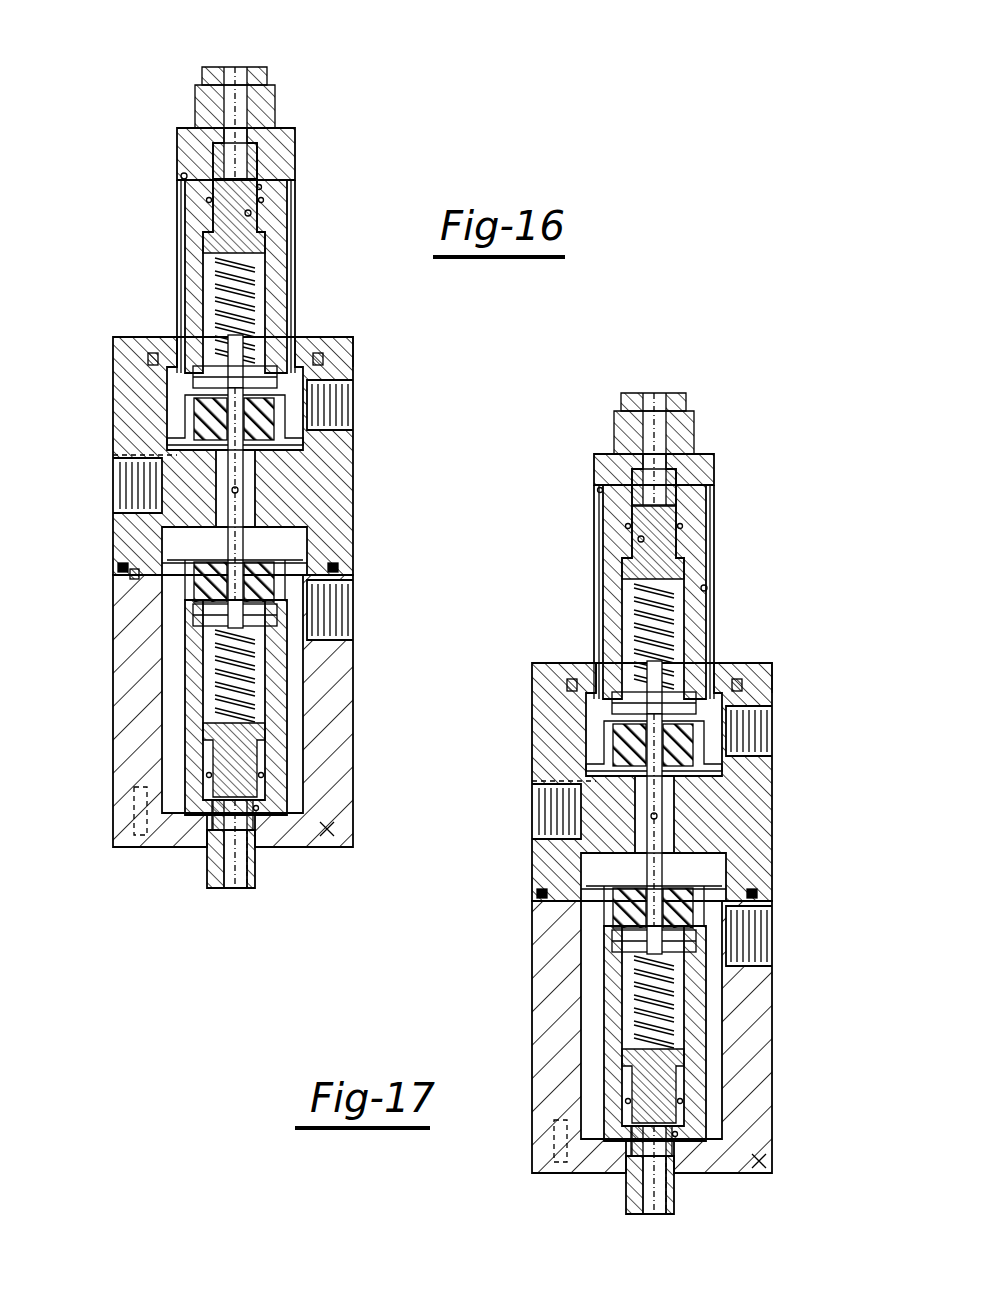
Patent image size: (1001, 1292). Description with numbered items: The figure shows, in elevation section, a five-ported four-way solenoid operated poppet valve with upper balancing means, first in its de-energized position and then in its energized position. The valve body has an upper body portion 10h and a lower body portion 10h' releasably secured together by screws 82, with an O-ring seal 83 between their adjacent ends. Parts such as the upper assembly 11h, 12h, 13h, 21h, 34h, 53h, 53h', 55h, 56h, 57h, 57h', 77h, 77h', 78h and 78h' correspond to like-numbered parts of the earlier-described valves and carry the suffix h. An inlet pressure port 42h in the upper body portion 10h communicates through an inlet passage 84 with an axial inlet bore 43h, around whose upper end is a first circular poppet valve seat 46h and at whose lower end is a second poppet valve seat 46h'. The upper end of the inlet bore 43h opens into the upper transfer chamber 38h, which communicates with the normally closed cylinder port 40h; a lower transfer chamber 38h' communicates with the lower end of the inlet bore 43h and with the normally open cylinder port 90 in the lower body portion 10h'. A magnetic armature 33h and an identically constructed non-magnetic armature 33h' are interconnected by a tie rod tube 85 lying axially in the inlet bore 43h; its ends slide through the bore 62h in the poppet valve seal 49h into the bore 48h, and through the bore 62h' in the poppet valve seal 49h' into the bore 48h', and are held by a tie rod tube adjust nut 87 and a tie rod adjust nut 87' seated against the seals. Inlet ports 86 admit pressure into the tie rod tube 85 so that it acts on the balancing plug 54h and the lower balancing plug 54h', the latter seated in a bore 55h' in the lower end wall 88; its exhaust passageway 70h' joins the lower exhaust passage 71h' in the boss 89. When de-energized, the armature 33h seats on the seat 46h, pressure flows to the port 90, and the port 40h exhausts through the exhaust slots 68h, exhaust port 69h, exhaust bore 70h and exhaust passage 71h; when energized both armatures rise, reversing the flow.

In FIG. 16, the upper body portion 10h is at (199, 456).
In FIG. 17, the upper body portion 10h is at (623, 782).
In FIG. 16, the lower body portion 10h' is at (188, 711).
In FIG. 17, the lower body portion 10h' is at (597, 1037).
In FIG. 16, the upper valve assembly 11h is at (176, 226).
In FIG. 17, the upper valve assembly 11h is at (590, 508).
In FIG. 16, the annular clearance 12h is at (176, 257).
In FIG. 17, the annular clearance 12h is at (591, 493).
In FIG. 16, the housing flange 13h is at (300, 340).
In FIG. 17, the housing flange 13h is at (730, 663).
In FIG. 16, the cap nut 21h is at (180, 135).
In FIG. 17, the cap nut 21h is at (608, 460).
In FIG. 16, the magnetic armature 33h is at (278, 276).
In FIG. 17, the magnetic armature 33h is at (710, 592).
In FIG. 16, the non-magnetic armature 33h' is at (299, 707).
In FIG. 17, the non-magnetic armature 33h' is at (726, 1033).
In FIG. 16, the retaining ring 34h is at (181, 176).
In FIG. 17, the retaining ring 34h is at (707, 588).
In FIG. 16, the upper transfer chamber 38h is at (292, 464).
In FIG. 17, the upper transfer chamber 38h is at (724, 776).
In FIG. 16, the lower transfer chamber 38h' is at (290, 547).
In FIG. 17, the lower transfer chamber 38h' is at (594, 873).
In FIG. 16, the normally closed cylinder port 40h is at (310, 413).
In FIG. 17, the normally closed cylinder port 40h is at (763, 707).
In FIG. 16, the inlet pressure port 42h is at (115, 463).
In FIG. 17, the inlet pressure port 42h is at (535, 787).
In FIG. 16, the inlet bore 43h is at (290, 510).
In FIG. 17, the inlet bore 43h is at (657, 760).
In FIG. 16, the first circular poppet valve seat 46h is at (160, 417).
In FIG. 17, the first circular poppet valve seat 46h is at (584, 741).
In FIG. 16, the second circular poppet valve seat 46h' is at (313, 554).
In FIG. 17, the second circular poppet valve seat 46h' is at (733, 873).
In FIG. 16, the bore 48h is at (290, 336).
In FIG. 17, the bore 48h is at (570, 670).
In FIG. 16, the bore 48h' is at (140, 651).
In FIG. 17, the bore 48h' is at (552, 947).
In FIG. 16, the poppet valve seal 49h is at (294, 420).
In FIG. 17, the poppet valve seal 49h is at (719, 735).
In FIG. 16, the poppet valve seal 49h' is at (300, 580).
In FIG. 17, the poppet valve seal 49h' is at (720, 889).
In FIG. 16, the compression spring 53h is at (294, 310).
In FIG. 17, the compression spring 53h is at (598, 636).
In FIG. 16, the lower compression spring 53h' is at (150, 691).
In FIG. 17, the lower compression spring 53h' is at (568, 1003).
In FIG. 16, the balancing plug 54h is at (304, 211).
In FIG. 17, the balancing plug 54h is at (699, 542).
In FIG. 16, the lower balancing plug 54h' is at (198, 813).
In FIG. 17, the lower balancing plug 54h' is at (735, 1076).
In FIG. 16, the guide pin 55h is at (186, 158).
In FIG. 17, the guide pin 55h is at (729, 466).
In FIG. 16, the bore 55h' is at (188, 891).
In FIG. 17, the bore 55h' is at (582, 1169).
In FIG. 16, the cross bore 56h is at (251, 210).
In FIG. 17, the cross bore 56h is at (640, 565).
In FIG. 16, the piston seal 57h is at (154, 209).
In FIG. 17, the piston seal 57h is at (727, 513).
In FIG. 16, the lower piston seal 57h' is at (150, 784).
In FIG. 17, the lower piston seal 57h' is at (737, 1091).
In FIG. 16, the bore 62h is at (291, 344).
In FIG. 17, the bore 62h is at (672, 644).
In FIG. 16, the bore 62h' is at (81, 597).
In FIG. 16, the exhaust slots 68h is at (180, 190).
In FIG. 17, the exhaust slots 68h is at (599, 530).
In FIG. 16, the exhaust port 69h is at (255, 155).
In FIG. 17, the exhaust port 69h is at (677, 493).
In FIG. 16, the exhaust bore 70h is at (259, 53).
In FIG. 17, the exhaust bore 70h is at (686, 388).
In FIG. 16, the exhaust passageway 70h' is at (225, 916).
In FIG. 17, the exhaust passageway 70h' is at (618, 1204).
In FIG. 16, the exhaust passage 71h is at (222, 92).
In FIG. 17, the exhaust passage 71h is at (647, 412).
In FIG. 16, the lower exhaust passage 71h' is at (259, 886).
In FIG. 17, the lower exhaust passage 71h' is at (654, 1200).
In FIG. 16, the shoulder 77h is at (280, 93).
In FIG. 17, the shoulder 77h is at (698, 423).
In FIG. 16, the lower shoulder 77h' is at (179, 867).
In FIG. 17, the lower shoulder 77h' is at (685, 1176).
In FIG. 16, the seal ring 78h is at (351, 164).
In FIG. 17, the seal ring 78h is at (566, 457).
In FIG. 16, the lower seal ring 78h' is at (301, 857).
In FIG. 17, the lower seal ring 78h' is at (763, 1131).
In FIG. 16, the screws 82 is at (133, 828).
In FIG. 17, the screws 82 is at (554, 1133).
In FIG. 16, the O-ring seal 83 is at (118, 568).
In FIG. 17, the O-ring seal 83 is at (540, 895).
In FIG. 16, the inlet passage 84 is at (117, 506).
In FIG. 17, the inlet passage 84 is at (559, 812).
In FIG. 16, the tie rod tube 85 is at (165, 527).
In FIG. 17, the tie rod tube 85 is at (677, 830).
In FIG. 16, the inlet ports 86 is at (230, 489).
In FIG. 17, the inlet ports 86 is at (651, 814).
In FIG. 16, the tie rod tube adjust nut 87 is at (190, 338).
In FIG. 17, the tie rod tube adjust nut 87 is at (612, 670).
In FIG. 16, the tie rod adjust nut 87' is at (303, 610).
In FIG. 17, the tie rod adjust nut 87' is at (586, 927).
In FIG. 16, the lower end wall 88 is at (334, 832).
In FIG. 17, the lower end wall 88 is at (764, 1172).
In FIG. 16, the boss 89 is at (251, 860).
In FIG. 17, the boss 89 is at (675, 1209).
In FIG. 16, the normally open cylinder port 90 is at (320, 628).
In FIG. 17, the normally open cylinder port 90 is at (755, 962).